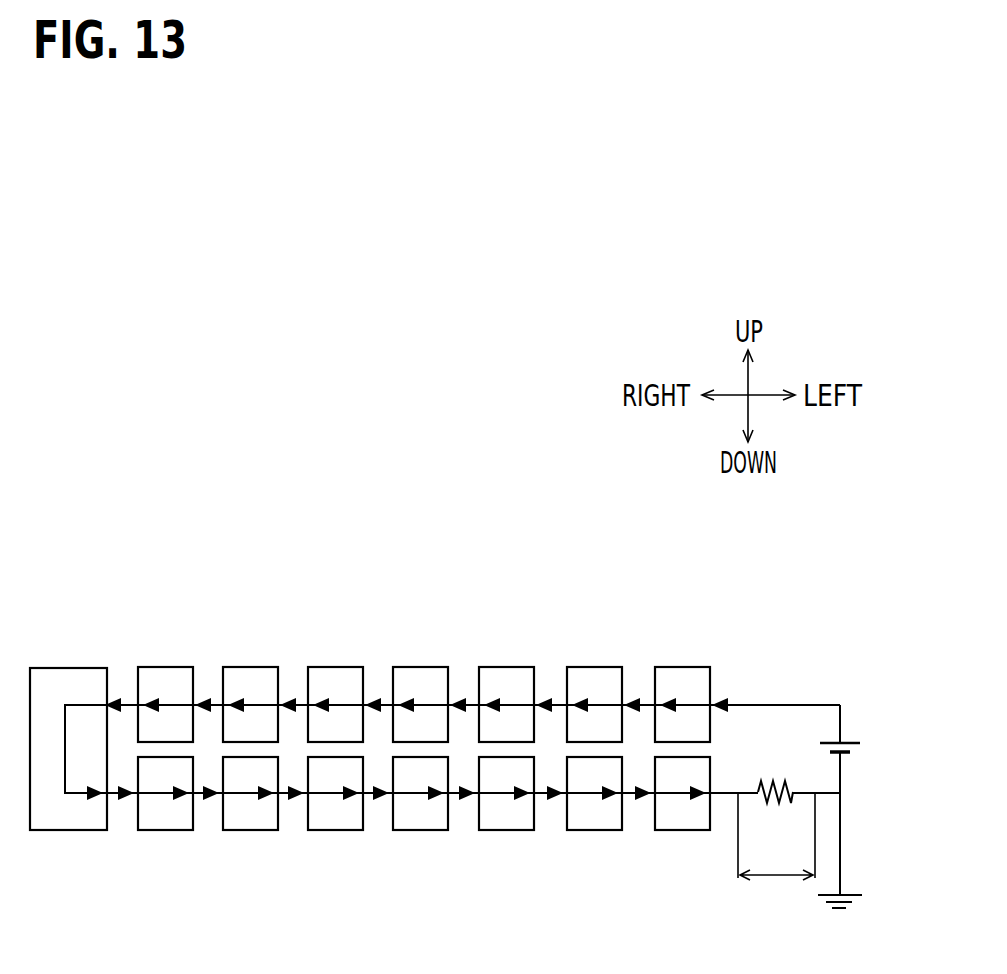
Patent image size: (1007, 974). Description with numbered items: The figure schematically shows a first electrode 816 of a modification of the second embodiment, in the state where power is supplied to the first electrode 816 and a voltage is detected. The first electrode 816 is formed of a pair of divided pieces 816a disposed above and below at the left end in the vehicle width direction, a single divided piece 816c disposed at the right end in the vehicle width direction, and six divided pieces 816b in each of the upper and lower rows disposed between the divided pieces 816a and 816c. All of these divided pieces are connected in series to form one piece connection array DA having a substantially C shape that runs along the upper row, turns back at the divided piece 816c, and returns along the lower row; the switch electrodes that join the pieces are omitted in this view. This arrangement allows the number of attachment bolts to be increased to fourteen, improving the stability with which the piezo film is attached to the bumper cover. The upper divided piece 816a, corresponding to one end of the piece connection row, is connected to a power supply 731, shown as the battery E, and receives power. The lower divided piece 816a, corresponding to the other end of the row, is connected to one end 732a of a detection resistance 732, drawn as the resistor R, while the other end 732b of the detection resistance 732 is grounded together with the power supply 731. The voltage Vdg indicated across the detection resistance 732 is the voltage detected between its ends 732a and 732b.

The first electrode 816 is at (54, 620).
The divided pieces 816a is at (696, 749).
The divided pieces 816b is at (388, 749).
The divided piece 816c is at (68, 675).
The power supply 731 is at (855, 704).
The detection resistance 732 is at (747, 758).
The one end of the detection resistance 732a is at (722, 797).
The other end of the detection resistance 732b is at (823, 797).
The piece connection array DA is at (318, 495).
The resistor R is at (776, 756).
The power source E is at (878, 747).
The voltage across resistor Vdg is at (776, 836).